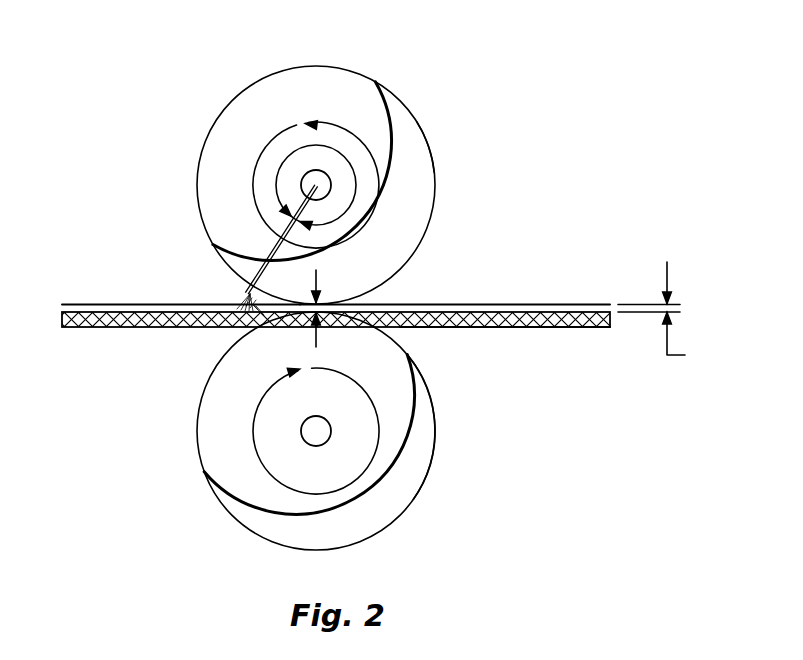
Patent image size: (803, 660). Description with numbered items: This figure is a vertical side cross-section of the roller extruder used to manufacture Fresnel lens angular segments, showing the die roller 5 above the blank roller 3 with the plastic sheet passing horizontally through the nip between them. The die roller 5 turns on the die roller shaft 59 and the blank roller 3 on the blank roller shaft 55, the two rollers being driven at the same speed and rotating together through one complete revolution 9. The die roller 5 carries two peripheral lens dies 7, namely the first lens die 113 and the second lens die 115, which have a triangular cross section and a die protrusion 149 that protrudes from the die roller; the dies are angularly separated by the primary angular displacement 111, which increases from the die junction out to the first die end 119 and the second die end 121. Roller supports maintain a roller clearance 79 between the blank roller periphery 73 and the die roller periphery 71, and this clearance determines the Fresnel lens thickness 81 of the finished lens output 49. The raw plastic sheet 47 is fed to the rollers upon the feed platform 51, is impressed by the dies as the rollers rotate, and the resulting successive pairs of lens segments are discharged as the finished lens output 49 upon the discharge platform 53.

The blank roller 3 is at (414, 499).
The die roller 5 is at (417, 122).
The peripheral lens dies 7 is at (254, 298).
The complete revolution 9 is at (330, 118).
The raw plastic sheet 47 is at (103, 304).
The finished lens output 49 is at (484, 304).
The feed platform 51 is at (90, 328).
The discharge platform 53 is at (543, 327).
The blank roller shaft 55 is at (331, 430).
The die roller shaft 59 is at (332, 178).
The die roller periphery 71 is at (434, 173).
The blank roller periphery 73 is at (205, 470).
The roller clearance 79 is at (332, 283).
The Fresnel lens thickness 81 is at (669, 315).
The primary angular displacement 111 is at (285, 158).
The first lens die 113 is at (260, 312).
The second lens die 115 is at (252, 296).
The first die end 119 is at (264, 315).
The second die end 121 is at (256, 300).
The die protrusion 149 is at (258, 310).